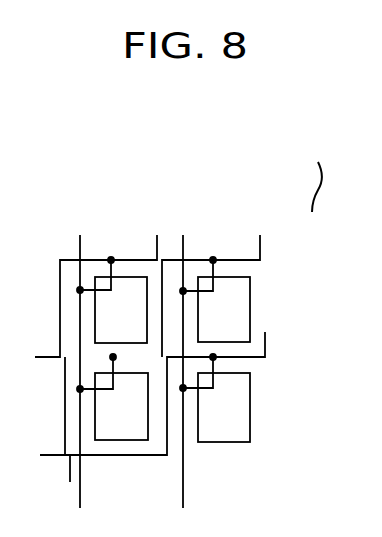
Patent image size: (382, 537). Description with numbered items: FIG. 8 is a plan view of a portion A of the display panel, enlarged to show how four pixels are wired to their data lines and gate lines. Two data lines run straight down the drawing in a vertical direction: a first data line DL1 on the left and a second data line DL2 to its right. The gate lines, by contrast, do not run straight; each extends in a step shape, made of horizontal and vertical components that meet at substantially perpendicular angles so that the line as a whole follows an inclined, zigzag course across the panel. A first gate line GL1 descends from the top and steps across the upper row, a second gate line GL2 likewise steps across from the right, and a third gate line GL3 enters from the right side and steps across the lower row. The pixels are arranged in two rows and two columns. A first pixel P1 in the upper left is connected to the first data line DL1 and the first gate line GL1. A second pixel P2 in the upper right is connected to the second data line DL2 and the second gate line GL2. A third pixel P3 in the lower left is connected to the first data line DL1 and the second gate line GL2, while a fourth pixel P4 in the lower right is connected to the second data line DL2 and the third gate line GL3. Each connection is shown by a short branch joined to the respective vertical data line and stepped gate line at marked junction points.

The portion A is at (318, 176).
The first data line DL1 is at (78, 358).
The second data line DL2 is at (192, 358).
The first gate line GL1 is at (100, 282).
The second gate line GL2 is at (218, 282).
The third gate line GL3 is at (165, 395).
The first pixel P1 is at (112, 300).
The second pixel P2 is at (215, 299).
The third pixel P3 is at (112, 397).
The fourth pixel P4 is at (215, 398).